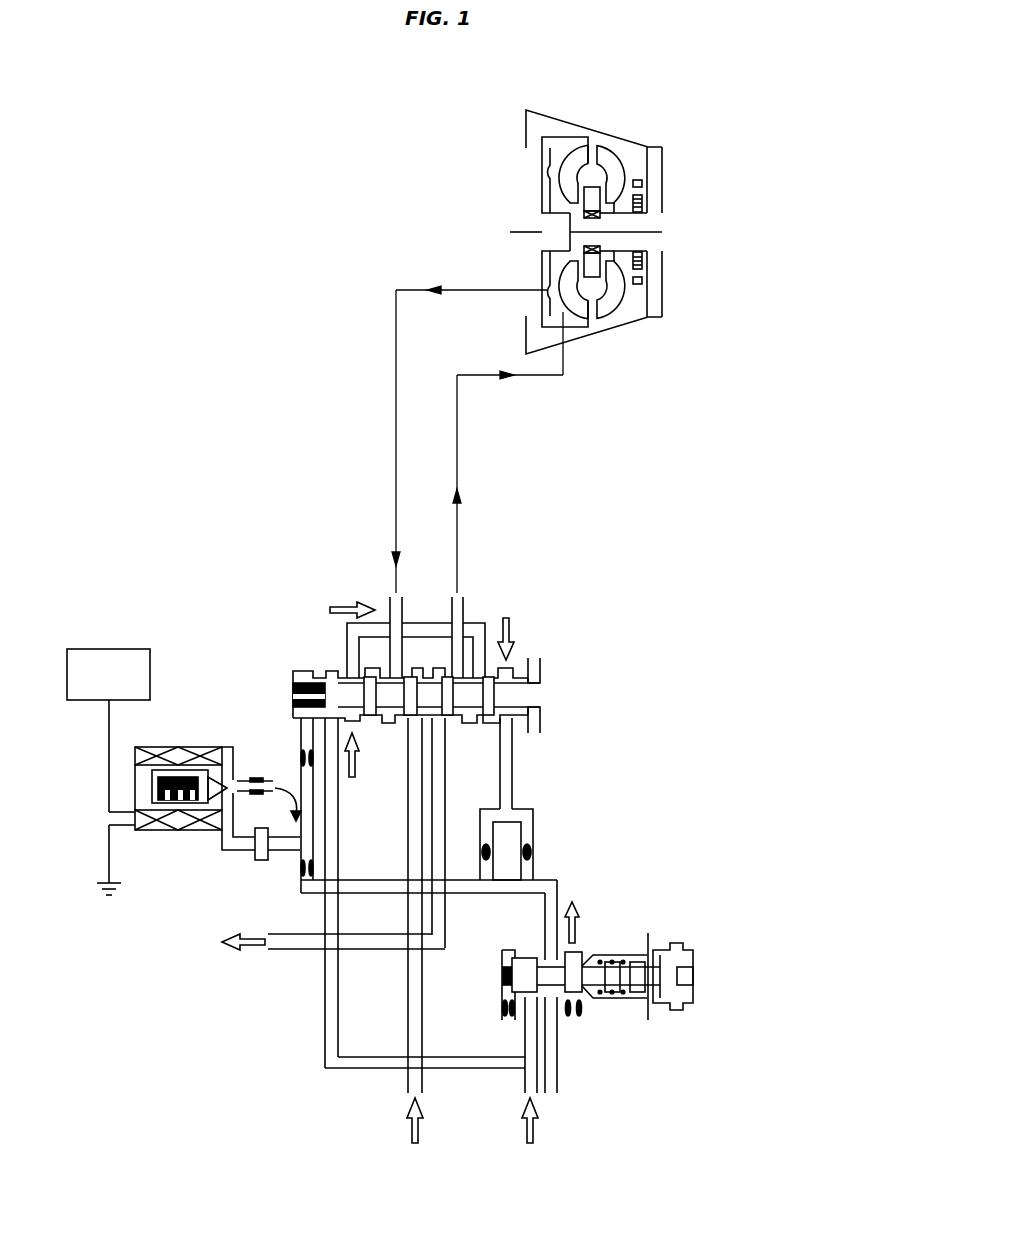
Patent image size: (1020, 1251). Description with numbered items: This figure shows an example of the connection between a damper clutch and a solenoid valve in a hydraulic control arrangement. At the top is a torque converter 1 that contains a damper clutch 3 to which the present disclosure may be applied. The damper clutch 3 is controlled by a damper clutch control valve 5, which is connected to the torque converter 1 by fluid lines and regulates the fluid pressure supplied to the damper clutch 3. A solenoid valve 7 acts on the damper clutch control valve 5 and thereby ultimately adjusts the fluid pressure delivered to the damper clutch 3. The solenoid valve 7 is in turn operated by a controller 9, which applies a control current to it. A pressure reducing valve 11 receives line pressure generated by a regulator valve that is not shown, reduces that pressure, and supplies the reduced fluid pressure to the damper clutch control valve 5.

The torque converter 1 is at (625, 150).
The damper clutch 3 is at (558, 150).
The damper clutch control valve 5 is at (593, 690).
The solenoid valve 7 is at (203, 731).
The controller 9 is at (109, 648).
The pressure reducing valve 11 is at (707, 978).